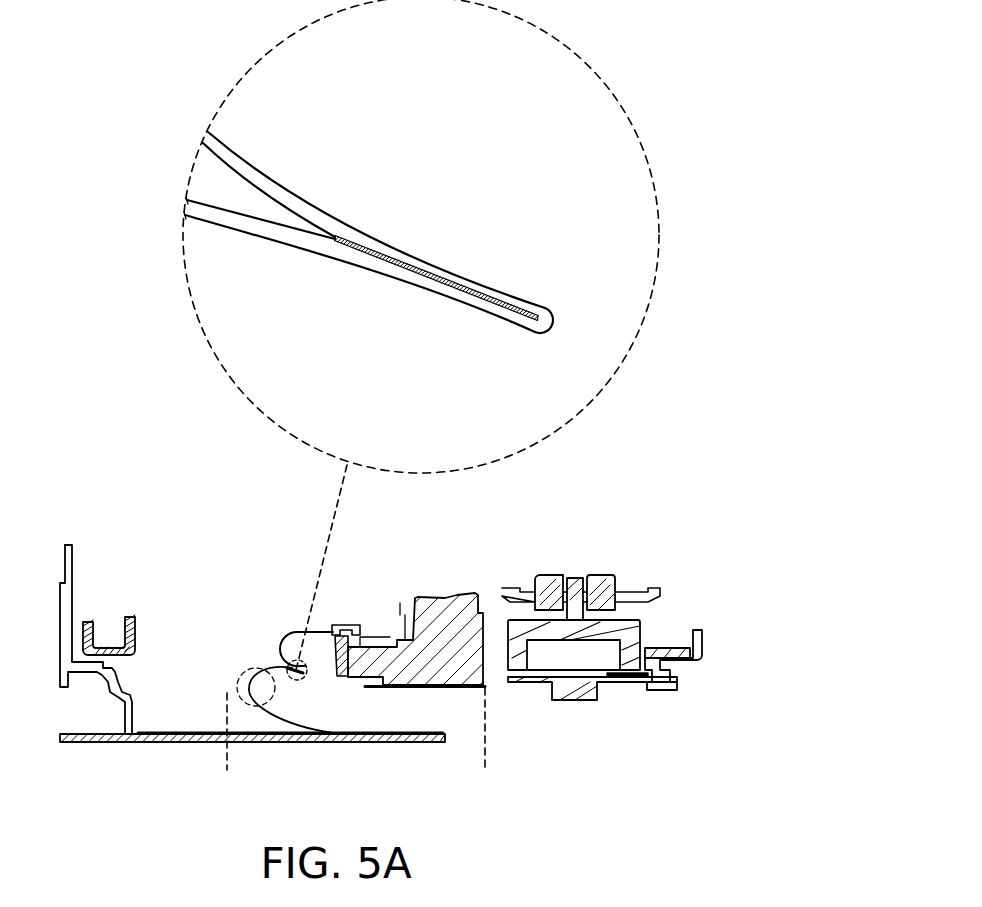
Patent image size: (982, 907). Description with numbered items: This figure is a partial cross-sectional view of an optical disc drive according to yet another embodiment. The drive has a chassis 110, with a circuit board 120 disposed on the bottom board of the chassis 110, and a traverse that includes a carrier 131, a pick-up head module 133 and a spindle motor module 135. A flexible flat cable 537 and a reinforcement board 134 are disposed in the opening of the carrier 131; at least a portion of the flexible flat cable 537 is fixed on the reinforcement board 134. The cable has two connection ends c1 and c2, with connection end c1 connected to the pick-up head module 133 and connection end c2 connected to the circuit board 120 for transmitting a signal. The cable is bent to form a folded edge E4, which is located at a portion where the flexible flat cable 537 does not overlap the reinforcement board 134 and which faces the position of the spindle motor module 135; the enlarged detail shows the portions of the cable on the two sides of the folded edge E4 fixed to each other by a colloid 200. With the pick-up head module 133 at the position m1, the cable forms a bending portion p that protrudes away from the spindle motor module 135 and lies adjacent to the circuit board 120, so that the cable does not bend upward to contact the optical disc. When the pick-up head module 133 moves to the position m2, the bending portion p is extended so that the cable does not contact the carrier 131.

The flexible flat cable 537 is at (213, 146).
The colloid 200 is at (470, 287).
The folded edge E4 is at (553, 300).
The chassis 110 is at (72, 543).
The carrier 131 is at (92, 620).
The reinforcement board 134 is at (298, 633).
The connection end c1 is at (348, 635).
The pick-up head module 133 is at (462, 595).
The spindle motor module 135 is at (627, 553).
The bending portion p is at (240, 675).
The circuit board 120 is at (155, 742).
The position m2 is at (231, 748).
The connection end c2 is at (390, 732).
The position m1 is at (486, 746).